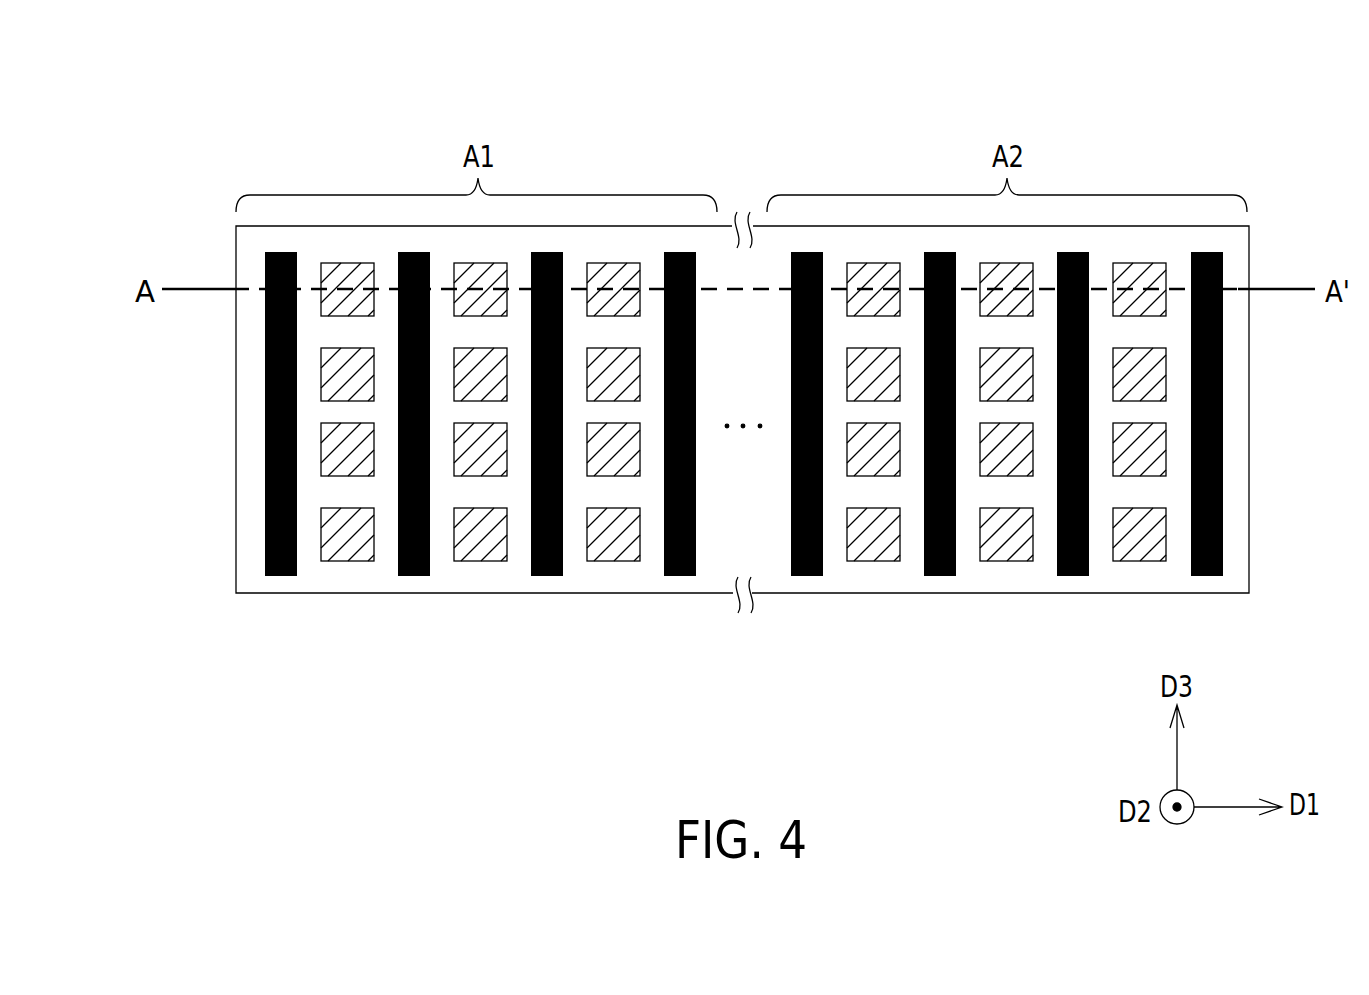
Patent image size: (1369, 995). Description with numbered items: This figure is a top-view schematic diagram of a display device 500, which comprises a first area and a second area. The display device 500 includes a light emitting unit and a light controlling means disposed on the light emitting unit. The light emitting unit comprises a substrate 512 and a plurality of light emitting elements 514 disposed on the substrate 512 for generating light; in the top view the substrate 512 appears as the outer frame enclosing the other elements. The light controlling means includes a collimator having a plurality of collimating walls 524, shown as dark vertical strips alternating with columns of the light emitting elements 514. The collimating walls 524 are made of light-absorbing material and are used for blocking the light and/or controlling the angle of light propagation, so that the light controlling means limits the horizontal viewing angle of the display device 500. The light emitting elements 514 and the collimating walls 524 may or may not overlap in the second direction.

The display device 500 is at (722, 348).
The substrate 512 is at (248, 478).
The collimating walls 524 is at (277, 576).
The light emitting elements 514 is at (346, 547).